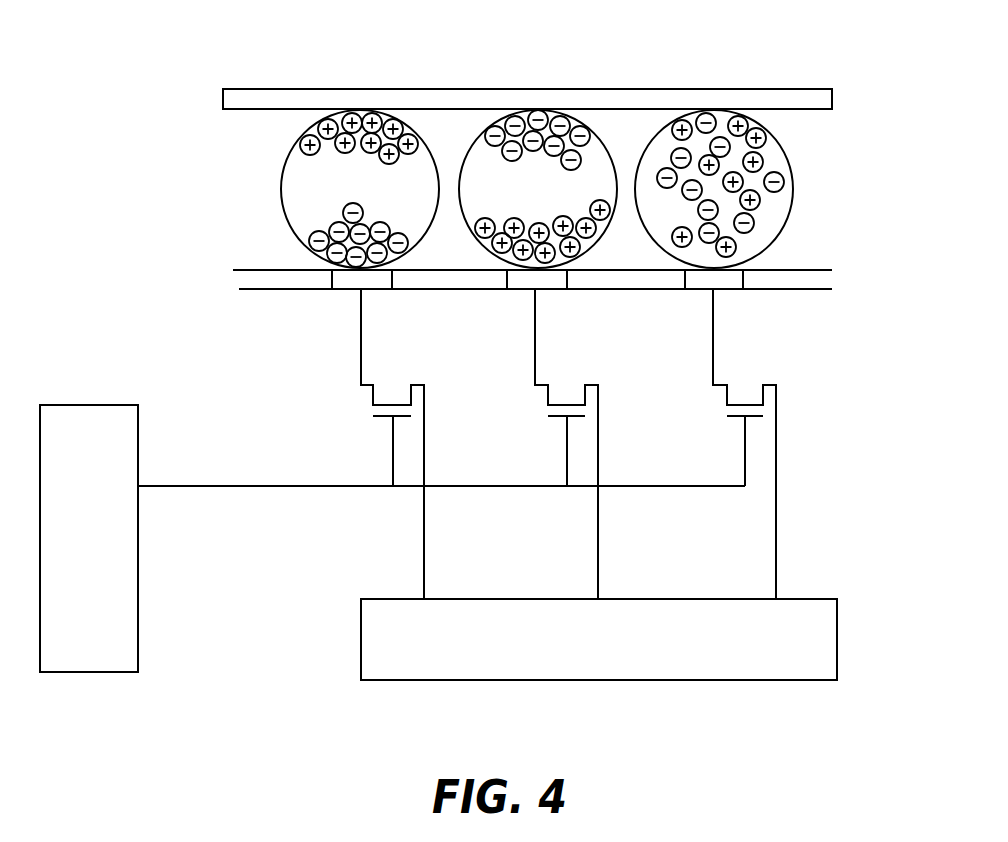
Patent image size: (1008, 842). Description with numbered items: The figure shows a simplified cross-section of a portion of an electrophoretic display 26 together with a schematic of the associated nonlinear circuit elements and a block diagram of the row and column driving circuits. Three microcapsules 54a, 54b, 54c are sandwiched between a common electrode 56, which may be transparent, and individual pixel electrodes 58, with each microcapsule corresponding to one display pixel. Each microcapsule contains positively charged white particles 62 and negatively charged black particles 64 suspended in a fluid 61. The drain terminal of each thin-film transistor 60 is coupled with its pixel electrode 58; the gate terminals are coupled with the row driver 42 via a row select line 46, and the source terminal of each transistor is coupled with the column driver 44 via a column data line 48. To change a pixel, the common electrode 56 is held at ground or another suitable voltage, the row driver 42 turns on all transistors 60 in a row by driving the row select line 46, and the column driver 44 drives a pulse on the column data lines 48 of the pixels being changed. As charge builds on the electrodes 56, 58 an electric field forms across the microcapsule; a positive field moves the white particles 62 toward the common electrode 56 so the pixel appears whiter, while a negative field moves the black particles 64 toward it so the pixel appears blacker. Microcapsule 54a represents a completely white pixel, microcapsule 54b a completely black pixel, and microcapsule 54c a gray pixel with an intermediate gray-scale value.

The electrophoretic display 26 is at (502, 177).
The row driver 42 is at (138, 657).
The column driver 44 is at (837, 658).
The row select line 46 is at (278, 488).
The column data line 48 is at (425, 563).
The microcapsule 54a is at (313, 189).
The microcapsule 54b is at (498, 120).
The microcapsule 54c is at (763, 189).
The common electrode 56 is at (661, 96).
The pixel electrode 58 is at (340, 287).
The thin-film transistor 60 is at (347, 403).
The fluid 61 is at (770, 222).
The positively charged white particles 62 is at (300, 146).
The negatively charged black particles 64 is at (783, 182).